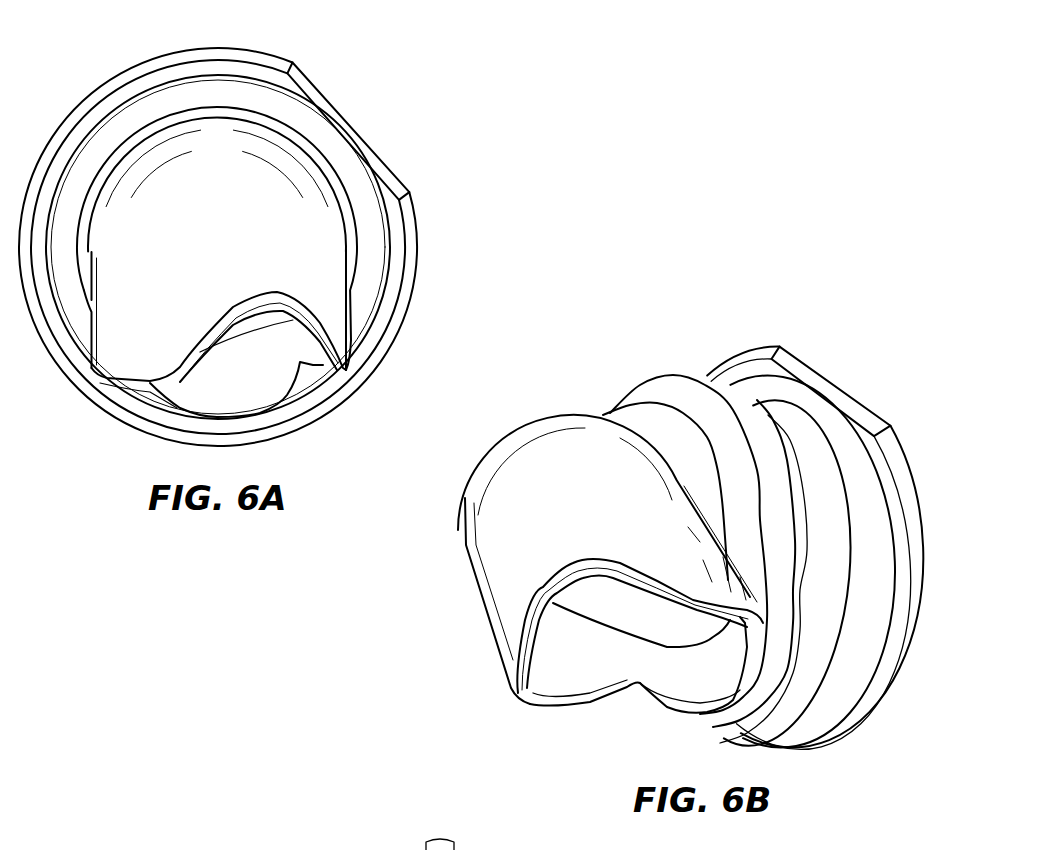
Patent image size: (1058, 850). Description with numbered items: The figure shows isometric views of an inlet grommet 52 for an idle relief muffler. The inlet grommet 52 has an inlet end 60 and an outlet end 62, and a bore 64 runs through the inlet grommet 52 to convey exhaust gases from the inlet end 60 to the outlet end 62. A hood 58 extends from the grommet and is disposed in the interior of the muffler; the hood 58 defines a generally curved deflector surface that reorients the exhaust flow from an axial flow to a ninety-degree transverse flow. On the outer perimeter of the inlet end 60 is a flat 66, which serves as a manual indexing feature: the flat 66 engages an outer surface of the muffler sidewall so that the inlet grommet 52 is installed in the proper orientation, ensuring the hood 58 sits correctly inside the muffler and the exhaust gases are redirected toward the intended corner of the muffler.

In FIG. 6A, the inlet grommet 52 is at (406, 126).
In FIG. 6B, the inlet grommet 52 is at (884, 370).
In FIG. 6A, the hood 58 is at (173, 192).
In FIG. 6B, the hood 58 is at (496, 507).
In FIG. 6B, the inlet end 60 is at (911, 664).
In FIG. 6A, the outlet end 62 is at (136, 392).
In FIG. 6B, the outlet end 62 is at (567, 722).
In FIG. 6A, the bore 64 is at (258, 348).
In FIG. 6B, the bore 64 is at (684, 670).
In FIG. 6A, the flat 66 is at (327, 95).
In FIG. 6B, the flat 66 is at (806, 358).